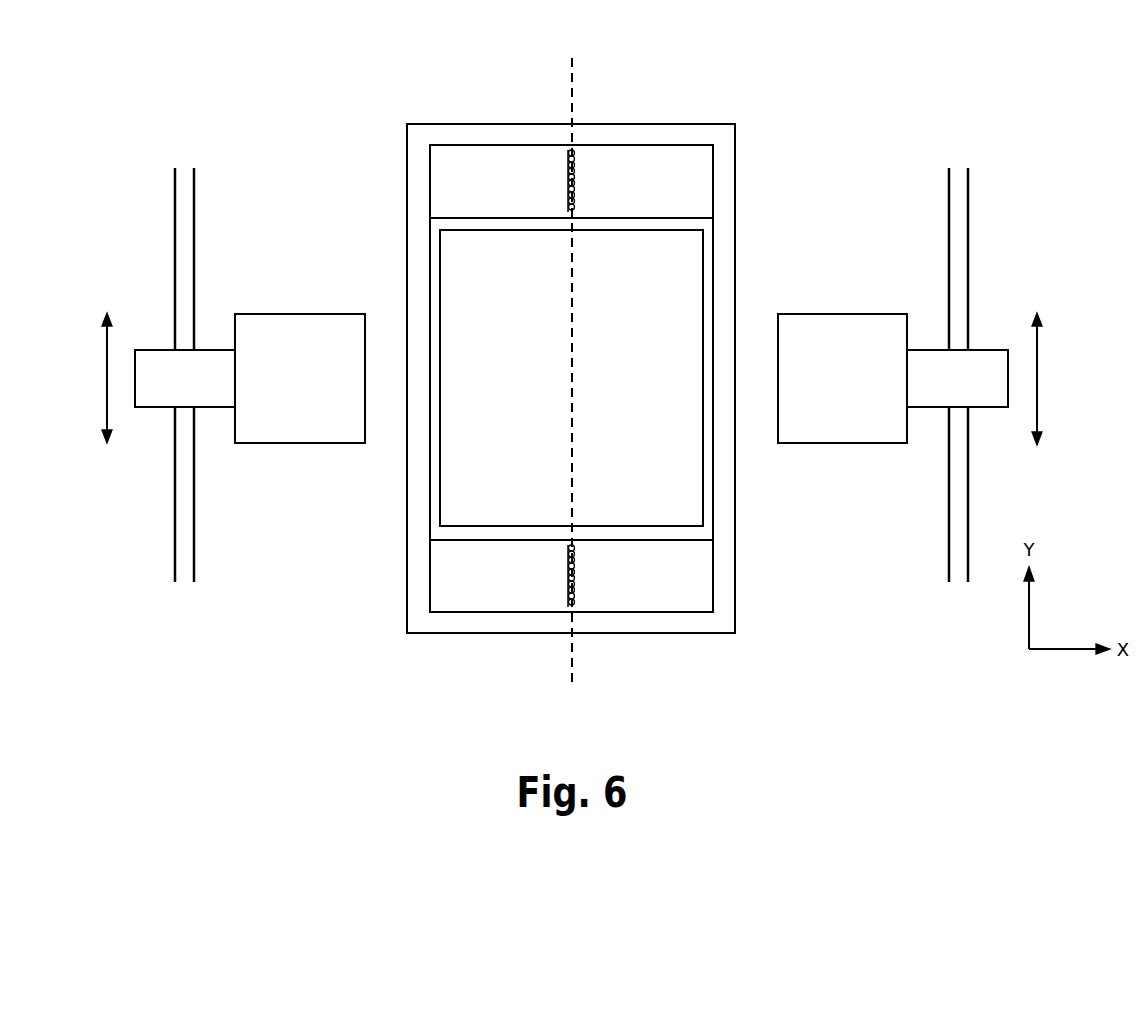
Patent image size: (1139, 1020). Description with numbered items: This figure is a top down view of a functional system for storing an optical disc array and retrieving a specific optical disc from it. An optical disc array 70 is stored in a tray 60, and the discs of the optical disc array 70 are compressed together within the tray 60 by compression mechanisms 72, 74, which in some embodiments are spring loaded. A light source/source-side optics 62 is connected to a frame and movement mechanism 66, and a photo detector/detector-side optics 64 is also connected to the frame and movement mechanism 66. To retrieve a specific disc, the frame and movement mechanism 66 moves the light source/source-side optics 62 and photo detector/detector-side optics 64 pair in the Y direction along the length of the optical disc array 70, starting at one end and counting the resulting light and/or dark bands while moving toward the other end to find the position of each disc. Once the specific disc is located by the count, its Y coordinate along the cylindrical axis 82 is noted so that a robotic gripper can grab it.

The tray 60 is at (469, 128).
The light source/source-side optics 62 is at (300, 314).
The photo detector/detector-side optics 64 is at (842, 314).
The frame and movement mechanism 66 is at (157, 350).
The optical disc array 70 is at (465, 305).
The compression mechanism 72 is at (575, 577).
The compression mechanism 74 is at (575, 183).
The cylindrical axis 82 is at (570, 75).